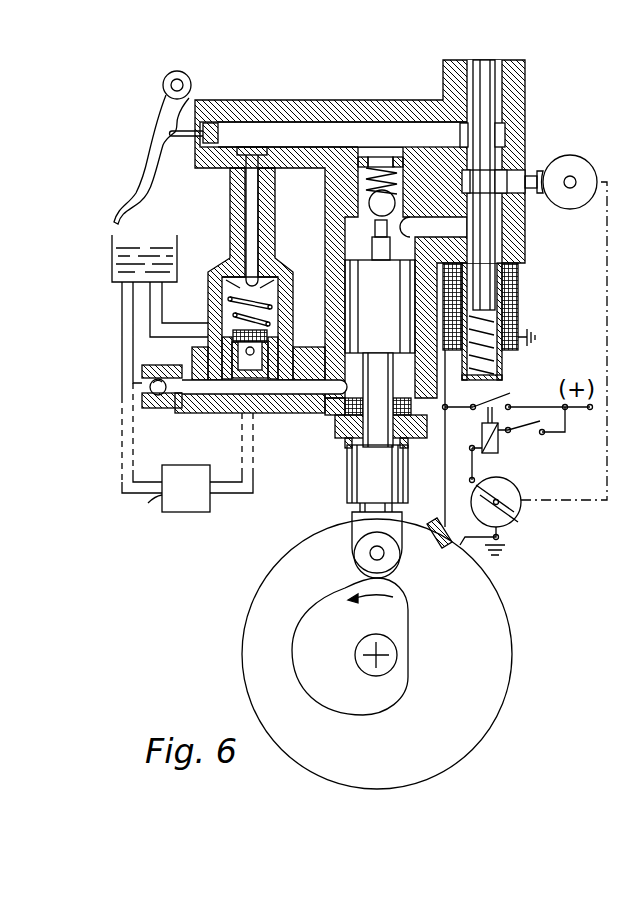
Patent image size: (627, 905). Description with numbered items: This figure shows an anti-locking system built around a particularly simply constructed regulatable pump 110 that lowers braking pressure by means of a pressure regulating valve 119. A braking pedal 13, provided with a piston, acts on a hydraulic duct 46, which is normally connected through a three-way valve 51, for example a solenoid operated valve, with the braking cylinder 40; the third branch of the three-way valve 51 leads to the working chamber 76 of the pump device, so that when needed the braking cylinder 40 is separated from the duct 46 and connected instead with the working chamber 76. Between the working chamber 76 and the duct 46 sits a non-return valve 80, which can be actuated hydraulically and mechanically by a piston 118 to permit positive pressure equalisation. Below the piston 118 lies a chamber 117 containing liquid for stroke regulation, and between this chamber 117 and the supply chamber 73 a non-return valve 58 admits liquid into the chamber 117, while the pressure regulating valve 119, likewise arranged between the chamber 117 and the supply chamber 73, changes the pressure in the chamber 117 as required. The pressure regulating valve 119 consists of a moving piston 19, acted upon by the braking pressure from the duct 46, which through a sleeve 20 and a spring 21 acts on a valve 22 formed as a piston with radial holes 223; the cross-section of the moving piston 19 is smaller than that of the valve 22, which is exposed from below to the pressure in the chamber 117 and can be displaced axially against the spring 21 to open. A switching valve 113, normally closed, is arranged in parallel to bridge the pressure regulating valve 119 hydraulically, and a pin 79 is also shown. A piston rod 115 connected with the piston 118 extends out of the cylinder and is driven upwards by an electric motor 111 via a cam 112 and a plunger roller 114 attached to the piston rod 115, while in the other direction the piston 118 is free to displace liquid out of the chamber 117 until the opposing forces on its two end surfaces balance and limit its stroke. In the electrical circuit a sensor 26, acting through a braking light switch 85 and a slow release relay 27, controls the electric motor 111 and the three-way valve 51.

The braking pedal 13 is at (141, 163).
The moving piston 19 is at (256, 252).
The sleeve 20 is at (278, 280).
The spring 21 is at (278, 303).
The valve 22 is at (272, 337).
The radial holes 223 is at (249, 356).
The sensor 26 is at (518, 488).
The slow release relay 27 is at (474, 445).
The braking cylinder 40 is at (530, 167).
The duct 46 is at (402, 135).
The three-way valve 51 is at (508, 362).
The non-return valve 58 is at (162, 410).
The supply chamber 73 is at (160, 305).
The working chamber 76 is at (360, 223).
The pin 79 is at (255, 147).
The non-return valve 80 is at (363, 192).
The braking light switch 85 is at (531, 436).
The regulatable pump 110 is at (343, 100).
The electric motor 111 is at (483, 600).
The cam 112 is at (330, 600).
The switching valve 113 is at (185, 512).
The plunger roller 114 is at (360, 552).
The piston rod 115 is at (375, 507).
The chamber 117 is at (307, 393).
The piston 118 is at (380, 361).
The pressure regulating valve 119 is at (220, 252).